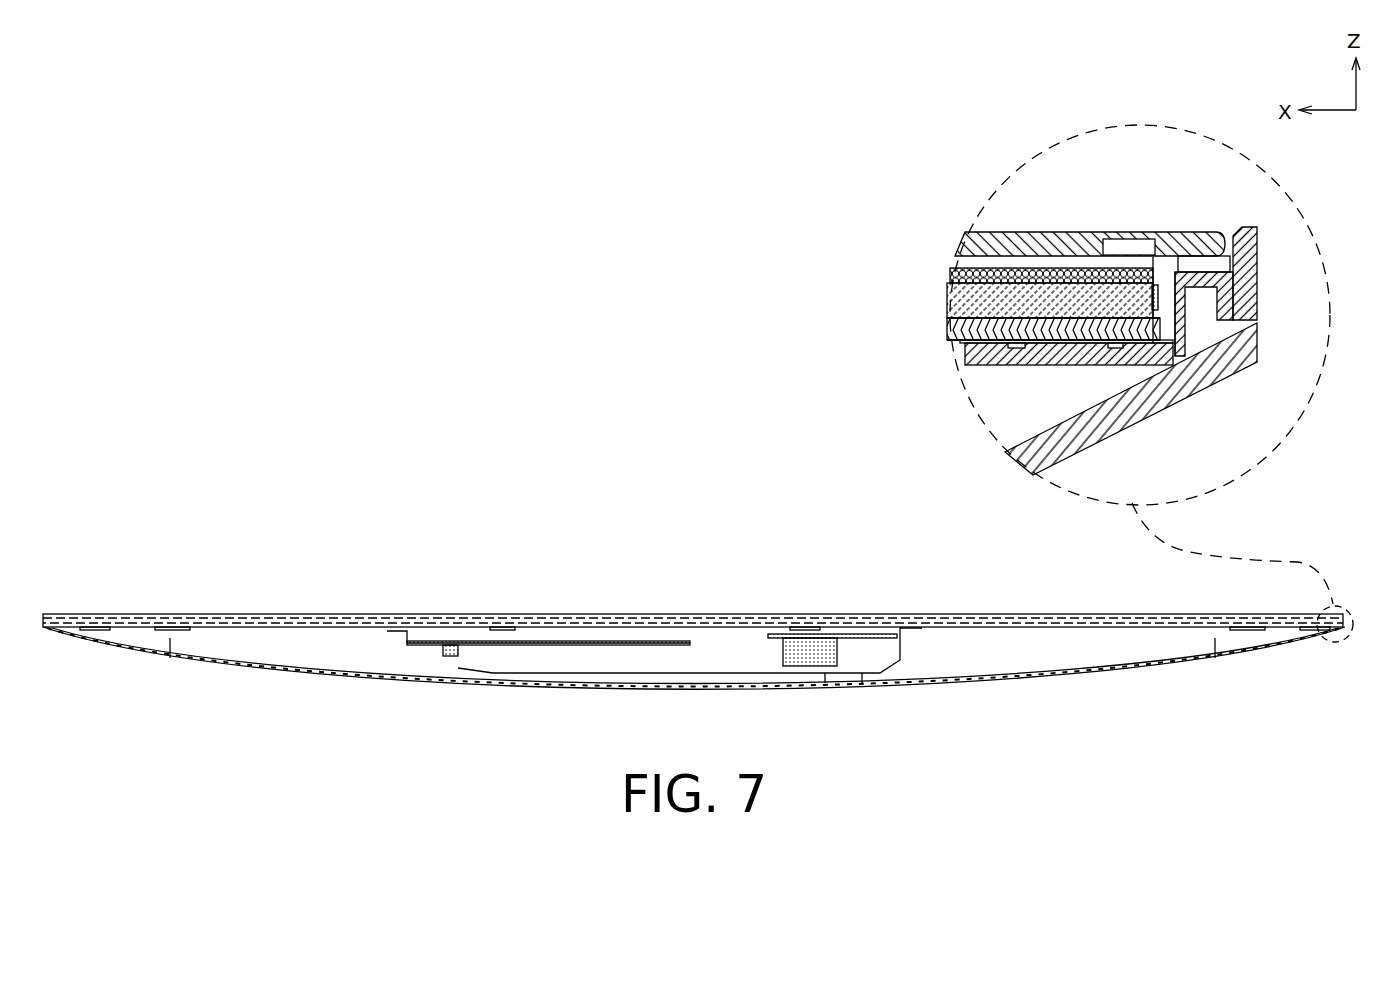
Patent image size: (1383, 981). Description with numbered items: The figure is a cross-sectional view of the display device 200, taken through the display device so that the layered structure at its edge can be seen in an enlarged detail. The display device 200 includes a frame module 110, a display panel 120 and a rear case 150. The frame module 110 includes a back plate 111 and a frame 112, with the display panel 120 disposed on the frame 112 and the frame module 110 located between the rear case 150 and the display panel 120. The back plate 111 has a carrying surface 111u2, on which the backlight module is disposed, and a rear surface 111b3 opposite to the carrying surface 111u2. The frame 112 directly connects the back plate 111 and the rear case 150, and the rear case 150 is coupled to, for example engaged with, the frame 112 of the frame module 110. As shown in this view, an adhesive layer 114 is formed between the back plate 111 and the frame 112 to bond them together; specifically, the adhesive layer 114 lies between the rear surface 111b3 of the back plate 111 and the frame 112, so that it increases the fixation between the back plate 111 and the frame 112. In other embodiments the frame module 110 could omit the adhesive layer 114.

The display device 200 is at (561, 545).
The display panel 120 is at (1018, 237).
The frame module 110 is at (845, 308).
The back plate 111 is at (947, 335).
The carrying surface 111u2 is at (997, 317).
The rear surface 111b3 is at (1058, 342).
The frame 112 is at (955, 352).
The adhesive layer 114 is at (998, 342).
The rear case 150 is at (1073, 452).